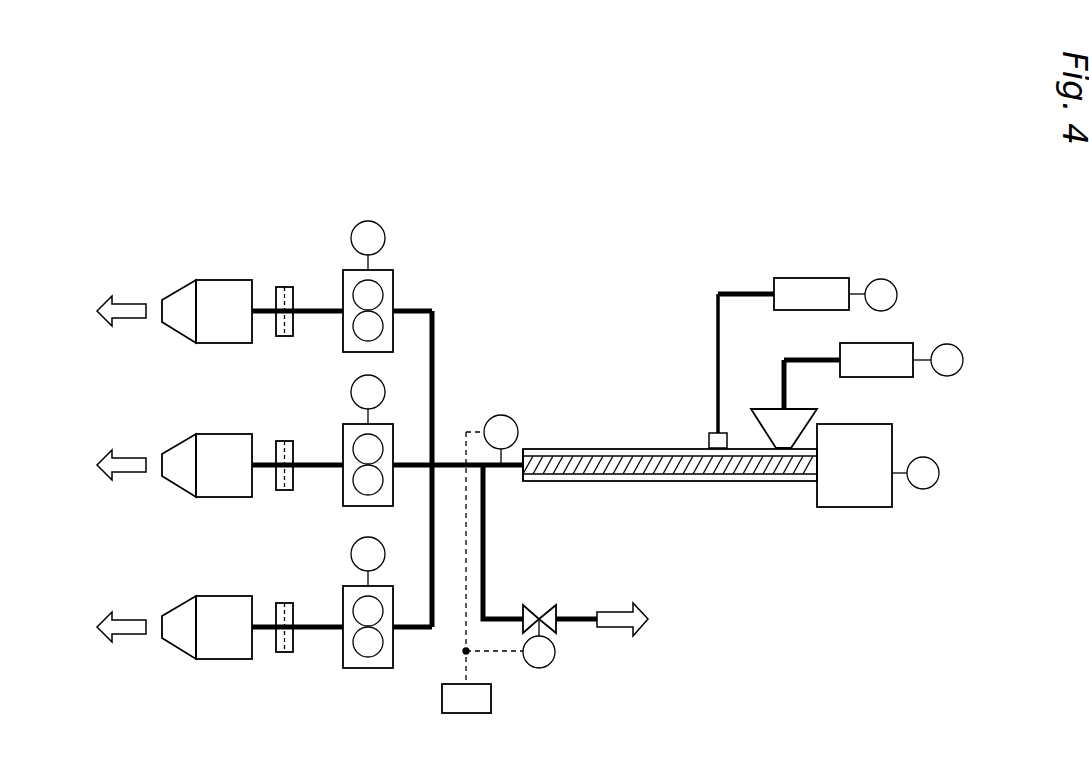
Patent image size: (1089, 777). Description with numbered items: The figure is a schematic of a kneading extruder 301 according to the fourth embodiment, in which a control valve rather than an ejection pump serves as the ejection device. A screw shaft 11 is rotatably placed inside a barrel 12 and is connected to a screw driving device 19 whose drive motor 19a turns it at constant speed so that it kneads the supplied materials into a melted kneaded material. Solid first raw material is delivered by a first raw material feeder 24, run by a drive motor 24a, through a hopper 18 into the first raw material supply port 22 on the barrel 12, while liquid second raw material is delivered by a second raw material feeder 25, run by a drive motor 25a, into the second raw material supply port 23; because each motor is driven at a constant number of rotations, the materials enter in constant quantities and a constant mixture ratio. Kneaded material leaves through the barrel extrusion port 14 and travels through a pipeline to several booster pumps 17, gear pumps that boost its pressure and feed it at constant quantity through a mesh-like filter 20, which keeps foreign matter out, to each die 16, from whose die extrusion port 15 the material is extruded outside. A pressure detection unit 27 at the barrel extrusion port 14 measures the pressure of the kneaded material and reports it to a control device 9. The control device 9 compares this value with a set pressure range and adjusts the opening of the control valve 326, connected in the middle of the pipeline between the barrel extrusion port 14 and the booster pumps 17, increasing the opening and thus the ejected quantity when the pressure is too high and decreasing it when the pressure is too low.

The kneading extruder 301 is at (932, 232).
The control device 9 is at (482, 572).
The screw shaft 11 is at (633, 476).
The barrel 12 is at (573, 482).
The barrel extrusion port 14 is at (521, 480).
The die extrusion port 15 is at (162, 302).
The die 16 is at (224, 279).
The booster pump 17 is at (342, 336).
The hopper 18 is at (762, 409).
The screw driving device 19 is at (856, 508).
The drive motor 19a is at (923, 457).
The mesh-like filter 20 is at (284, 287).
The first raw material supply port 22 is at (782, 449).
The second raw material supply port 23 is at (716, 449).
The first raw material feeder 24 is at (881, 343).
The drive motor 24a is at (949, 344).
The second raw material feeder 25 is at (815, 278).
The drive motor 25a is at (879, 279).
The pressure detection unit 27 is at (502, 415).
The control valve 326 is at (555, 650).